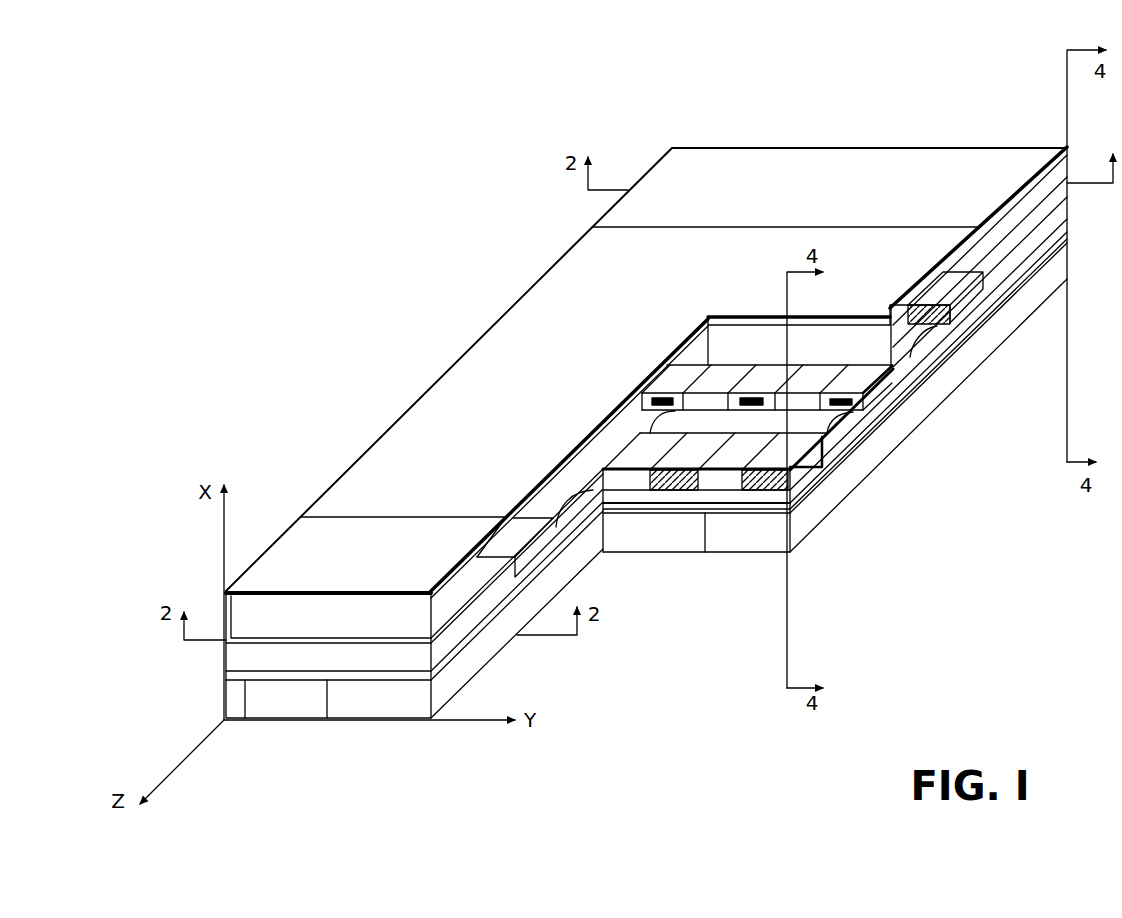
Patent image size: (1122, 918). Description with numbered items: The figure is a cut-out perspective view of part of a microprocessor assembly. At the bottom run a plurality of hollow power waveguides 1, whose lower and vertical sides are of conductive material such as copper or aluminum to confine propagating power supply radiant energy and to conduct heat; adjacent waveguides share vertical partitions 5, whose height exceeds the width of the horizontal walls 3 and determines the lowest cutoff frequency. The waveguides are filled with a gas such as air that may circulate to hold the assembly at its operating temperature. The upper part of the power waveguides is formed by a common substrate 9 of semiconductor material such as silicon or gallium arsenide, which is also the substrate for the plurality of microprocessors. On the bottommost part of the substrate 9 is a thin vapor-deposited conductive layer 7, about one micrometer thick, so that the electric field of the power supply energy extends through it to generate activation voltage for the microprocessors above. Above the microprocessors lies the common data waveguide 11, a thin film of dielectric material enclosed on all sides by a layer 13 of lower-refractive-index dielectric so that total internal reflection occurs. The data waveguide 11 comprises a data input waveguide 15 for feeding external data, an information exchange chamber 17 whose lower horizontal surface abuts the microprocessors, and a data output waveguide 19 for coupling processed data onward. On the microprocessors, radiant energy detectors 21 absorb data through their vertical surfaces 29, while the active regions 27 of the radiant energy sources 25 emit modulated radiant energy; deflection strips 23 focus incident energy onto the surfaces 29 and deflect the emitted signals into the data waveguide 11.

The power waveguides 1 is at (350, 706).
The horizontal walls 3 is at (722, 553).
The vertical partitions 5 is at (327, 700).
The conductive layer 7 is at (245, 688).
The common substrate 9 is at (383, 665).
The data waveguide 11 is at (477, 580).
The dielectric layer 13 is at (370, 592).
The data input waveguide 15 is at (289, 540).
The information exchange chamber 17 is at (467, 373).
The data output waveguide 19 is at (815, 168).
The radiant energy detectors 21 is at (807, 462).
The deflection strips 23 is at (578, 505).
The radiant energy sources 25 is at (897, 373).
The active regions 27 is at (843, 400).
The vertical surfaces 29 is at (772, 490).